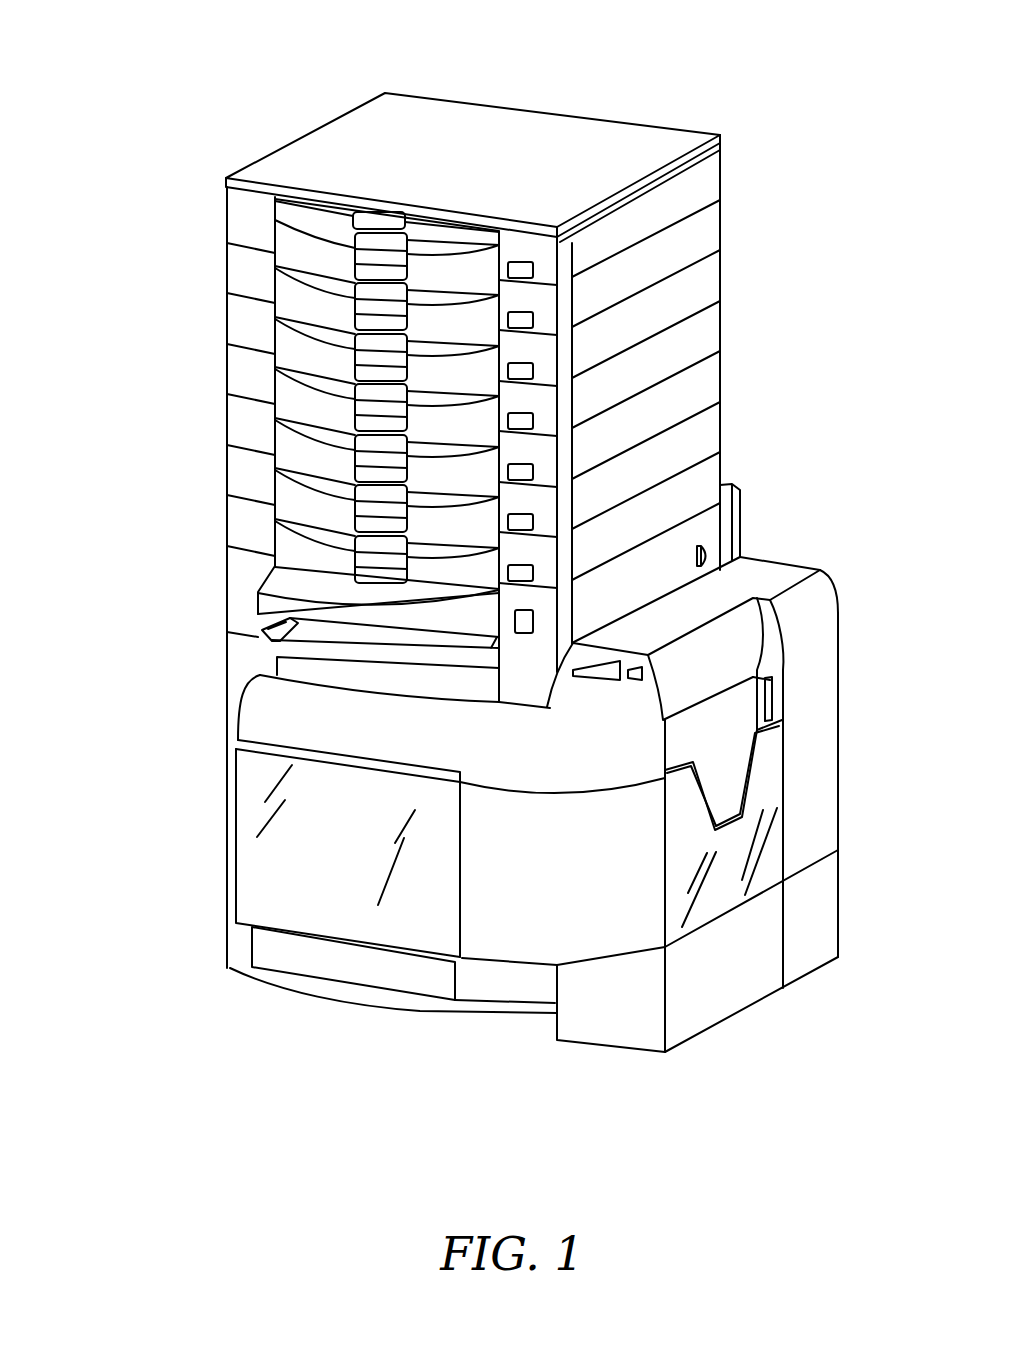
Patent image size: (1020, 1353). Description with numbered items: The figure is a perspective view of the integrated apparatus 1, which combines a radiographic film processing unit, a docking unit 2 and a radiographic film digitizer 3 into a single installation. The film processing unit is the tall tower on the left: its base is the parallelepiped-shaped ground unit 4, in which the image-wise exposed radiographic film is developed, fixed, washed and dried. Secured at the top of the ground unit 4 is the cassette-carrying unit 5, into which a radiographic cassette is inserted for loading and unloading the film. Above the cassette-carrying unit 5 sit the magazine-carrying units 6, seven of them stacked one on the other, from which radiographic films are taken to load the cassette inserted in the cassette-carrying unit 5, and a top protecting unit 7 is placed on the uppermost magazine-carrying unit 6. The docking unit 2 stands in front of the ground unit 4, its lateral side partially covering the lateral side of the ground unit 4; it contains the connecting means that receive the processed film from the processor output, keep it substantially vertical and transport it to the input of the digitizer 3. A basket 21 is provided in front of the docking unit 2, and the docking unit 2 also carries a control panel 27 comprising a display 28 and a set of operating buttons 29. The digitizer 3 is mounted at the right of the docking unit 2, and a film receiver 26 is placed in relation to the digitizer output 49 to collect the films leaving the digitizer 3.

The integrated apparatus 1 is at (168, 603).
The docking unit 2 is at (517, 910).
The radiographic film digitizer 3 is at (687, 730).
The parallelepiped-shaped ground unit 4 is at (237, 671).
The cassette-carrying unit 5 is at (348, 642).
The magazine-carrying units 6 is at (290, 355).
The top protecting unit 7 is at (468, 118).
The basket 21 is at (278, 887).
The film receiver 26 is at (710, 902).
The control panel 27 is at (488, 753).
The display 28 is at (602, 665).
The operating buttons 29 is at (633, 680).
The digitizer output 49 is at (770, 710).